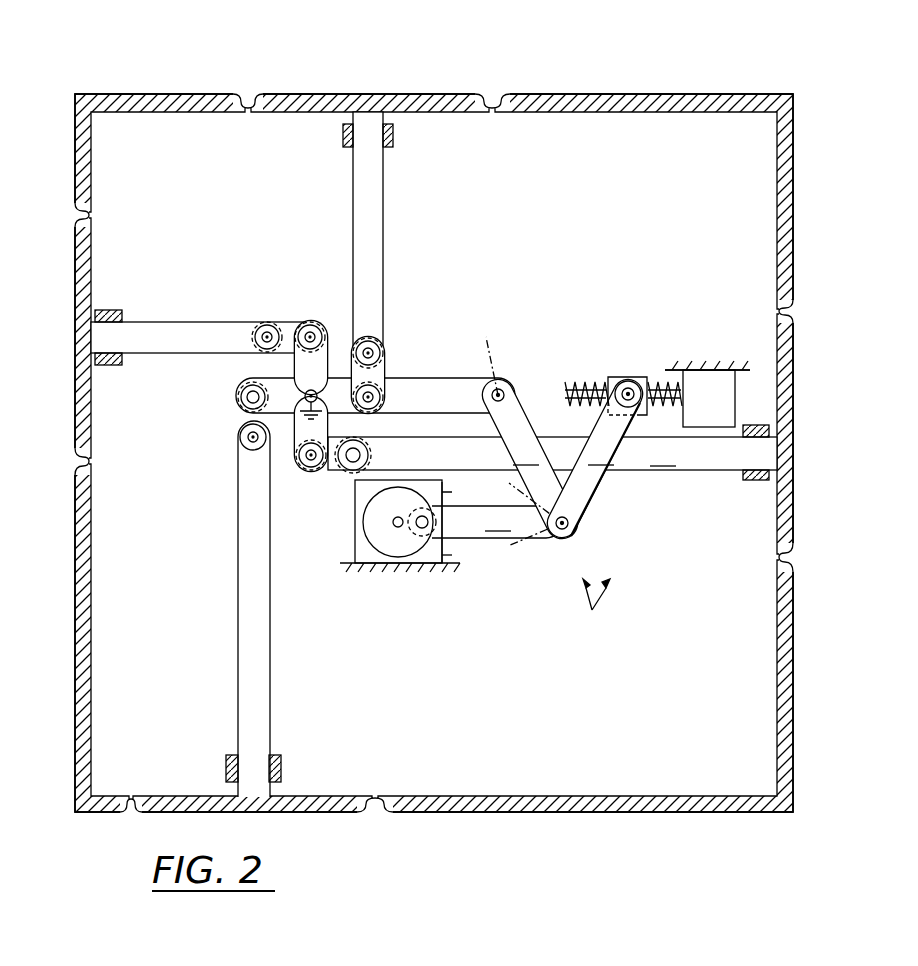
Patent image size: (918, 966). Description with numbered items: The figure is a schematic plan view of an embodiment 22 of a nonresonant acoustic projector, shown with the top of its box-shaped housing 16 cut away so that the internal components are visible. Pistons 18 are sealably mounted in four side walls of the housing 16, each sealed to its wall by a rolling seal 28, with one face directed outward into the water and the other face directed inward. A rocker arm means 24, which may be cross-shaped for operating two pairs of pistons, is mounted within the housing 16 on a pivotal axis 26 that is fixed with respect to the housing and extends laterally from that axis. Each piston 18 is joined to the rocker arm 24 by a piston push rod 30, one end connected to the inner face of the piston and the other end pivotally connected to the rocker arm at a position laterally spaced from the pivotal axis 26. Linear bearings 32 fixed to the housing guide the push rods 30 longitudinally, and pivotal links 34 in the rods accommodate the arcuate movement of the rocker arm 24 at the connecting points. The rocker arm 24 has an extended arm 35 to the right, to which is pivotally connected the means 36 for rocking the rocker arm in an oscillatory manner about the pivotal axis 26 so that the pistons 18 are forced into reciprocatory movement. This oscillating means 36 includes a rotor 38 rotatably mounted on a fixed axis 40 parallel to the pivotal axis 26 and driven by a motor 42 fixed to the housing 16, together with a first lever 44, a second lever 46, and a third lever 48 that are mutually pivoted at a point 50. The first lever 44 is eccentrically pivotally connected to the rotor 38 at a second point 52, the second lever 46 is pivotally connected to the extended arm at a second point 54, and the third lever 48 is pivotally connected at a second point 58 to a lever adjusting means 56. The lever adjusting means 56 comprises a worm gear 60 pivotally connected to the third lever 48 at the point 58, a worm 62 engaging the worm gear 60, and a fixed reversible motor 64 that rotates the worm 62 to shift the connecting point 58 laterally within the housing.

The housing 16 is at (703, 92).
The pistons 18 is at (392, 78).
The embodiment of the nonresonant acoustic projector 22 is at (634, 58).
The rocker arm means 24 is at (432, 380).
The pivotal axis 26 is at (300, 391).
The rolling seal 28 is at (491, 98).
The piston push rod 30 is at (201, 327).
The linear bearings 32 is at (393, 140).
The pivotal links 34 is at (305, 320).
The extended arm 35 is at (437, 446).
The means for rocking the rocker arm 36 is at (594, 608).
The rotor 38 is at (375, 516).
The fixed axis 40 is at (419, 522).
The motor 42 is at (443, 494).
The first lever 44 is at (497, 522).
The second lever 46 is at (524, 441).
The third lever 48 is at (601, 465).
The point 50 is at (569, 538).
The second point 52 is at (446, 555).
The second point 54 is at (501, 388).
The lever adjusting means 56 is at (710, 305).
The second point 58 is at (612, 378).
The worm gear 60 is at (630, 378).
The worm 62 is at (597, 381).
The fixed reversible motor 64 is at (704, 380).